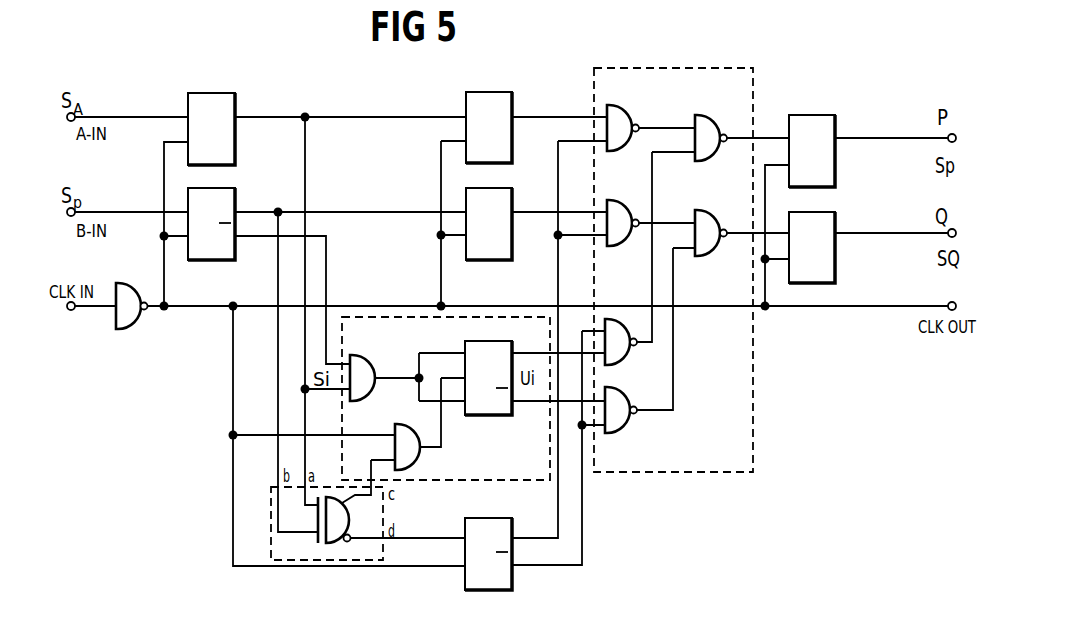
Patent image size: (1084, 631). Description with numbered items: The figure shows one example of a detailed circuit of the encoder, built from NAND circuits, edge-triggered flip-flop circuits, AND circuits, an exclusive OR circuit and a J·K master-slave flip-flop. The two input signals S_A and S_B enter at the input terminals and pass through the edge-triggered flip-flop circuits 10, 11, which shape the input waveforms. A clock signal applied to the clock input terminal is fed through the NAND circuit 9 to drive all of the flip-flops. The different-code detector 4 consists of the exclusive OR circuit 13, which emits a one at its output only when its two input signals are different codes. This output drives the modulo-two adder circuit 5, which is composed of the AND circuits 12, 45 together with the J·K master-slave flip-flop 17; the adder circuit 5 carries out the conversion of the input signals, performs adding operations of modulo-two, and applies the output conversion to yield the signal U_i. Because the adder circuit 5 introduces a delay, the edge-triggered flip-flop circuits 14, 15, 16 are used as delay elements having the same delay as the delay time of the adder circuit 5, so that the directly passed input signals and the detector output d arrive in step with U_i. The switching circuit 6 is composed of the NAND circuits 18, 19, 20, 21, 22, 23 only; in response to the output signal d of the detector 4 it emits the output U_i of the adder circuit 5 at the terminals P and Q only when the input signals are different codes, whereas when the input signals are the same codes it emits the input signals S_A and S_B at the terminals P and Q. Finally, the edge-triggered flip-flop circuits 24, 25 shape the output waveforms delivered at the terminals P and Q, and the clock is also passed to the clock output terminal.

The different-code detector 4 is at (270, 501).
The modulo-2 adder circuit 5 is at (429, 482).
The switching circuit 6 is at (754, 452).
The NAND circuit 9 is at (118, 283).
The edge-triggered flip-flop circuit 10 is at (215, 93).
The edge-triggered flip-flop circuit 11 is at (232, 190).
The AND circuit 12 is at (356, 355).
The exclusive OR circuit 13 is at (318, 536).
The edge-triggered flip-flop circuit 14 is at (490, 92).
The edge-triggered flip-flop circuit 15 is at (510, 188).
The edge-triggered flip-flop circuit 16 is at (497, 518).
The J·K master-slave flip-flop 17 is at (510, 341).
The NAND circuit 18 is at (618, 108).
The NAND circuit 19 is at (618, 202).
The NAND circuit 20 is at (627, 355).
The NAND circuit 21 is at (627, 428).
The NAND circuit 22 is at (704, 117).
The NAND circuit 23 is at (704, 212).
The edge-triggered flip-flop circuit 24 is at (826, 115).
The edge-triggered flip-flop circuit 25 is at (826, 212).
The AND circuit 45 is at (416, 460).